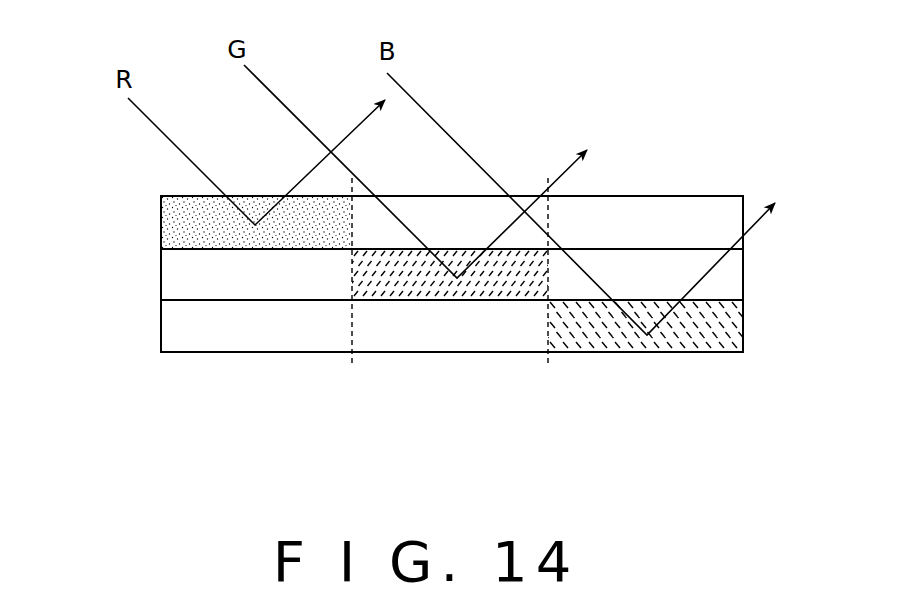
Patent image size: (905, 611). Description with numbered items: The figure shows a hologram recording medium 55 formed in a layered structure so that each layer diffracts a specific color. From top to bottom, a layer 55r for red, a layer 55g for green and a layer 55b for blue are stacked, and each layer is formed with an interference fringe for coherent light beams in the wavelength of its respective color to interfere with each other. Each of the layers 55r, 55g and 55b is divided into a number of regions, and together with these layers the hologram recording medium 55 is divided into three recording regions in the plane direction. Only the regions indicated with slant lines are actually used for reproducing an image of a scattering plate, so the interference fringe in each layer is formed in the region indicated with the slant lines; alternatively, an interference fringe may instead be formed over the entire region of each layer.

The hologram recording medium 55 is at (403, 307).
The layer for red 55r is at (258, 340).
The layer for green 55g is at (474, 343).
The layer for blue 55b is at (638, 345).